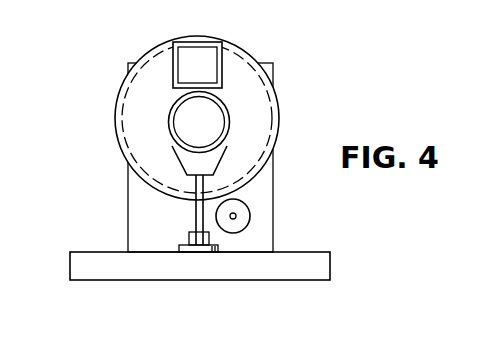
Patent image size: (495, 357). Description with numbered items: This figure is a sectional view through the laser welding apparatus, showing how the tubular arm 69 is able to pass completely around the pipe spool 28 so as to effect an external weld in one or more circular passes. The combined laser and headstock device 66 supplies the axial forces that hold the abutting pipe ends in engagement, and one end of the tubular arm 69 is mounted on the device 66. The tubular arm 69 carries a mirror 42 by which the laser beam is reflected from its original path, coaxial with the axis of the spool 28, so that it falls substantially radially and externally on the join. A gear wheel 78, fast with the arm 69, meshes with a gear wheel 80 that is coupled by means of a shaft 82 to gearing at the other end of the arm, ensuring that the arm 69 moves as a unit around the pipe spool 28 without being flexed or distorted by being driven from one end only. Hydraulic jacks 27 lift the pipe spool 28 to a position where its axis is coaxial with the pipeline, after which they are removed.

The hydraulic jacks 27 is at (193, 160).
The pipe spool 28 is at (166, 130).
The mirror 42 is at (205, 60).
The combined laser and headstock device 66 is at (167, 218).
The tubular arm 69 is at (173, 73).
The gear wheel 78 is at (257, 100).
The gear wheel 80 is at (248, 202).
The shaft 82 is at (237, 217).